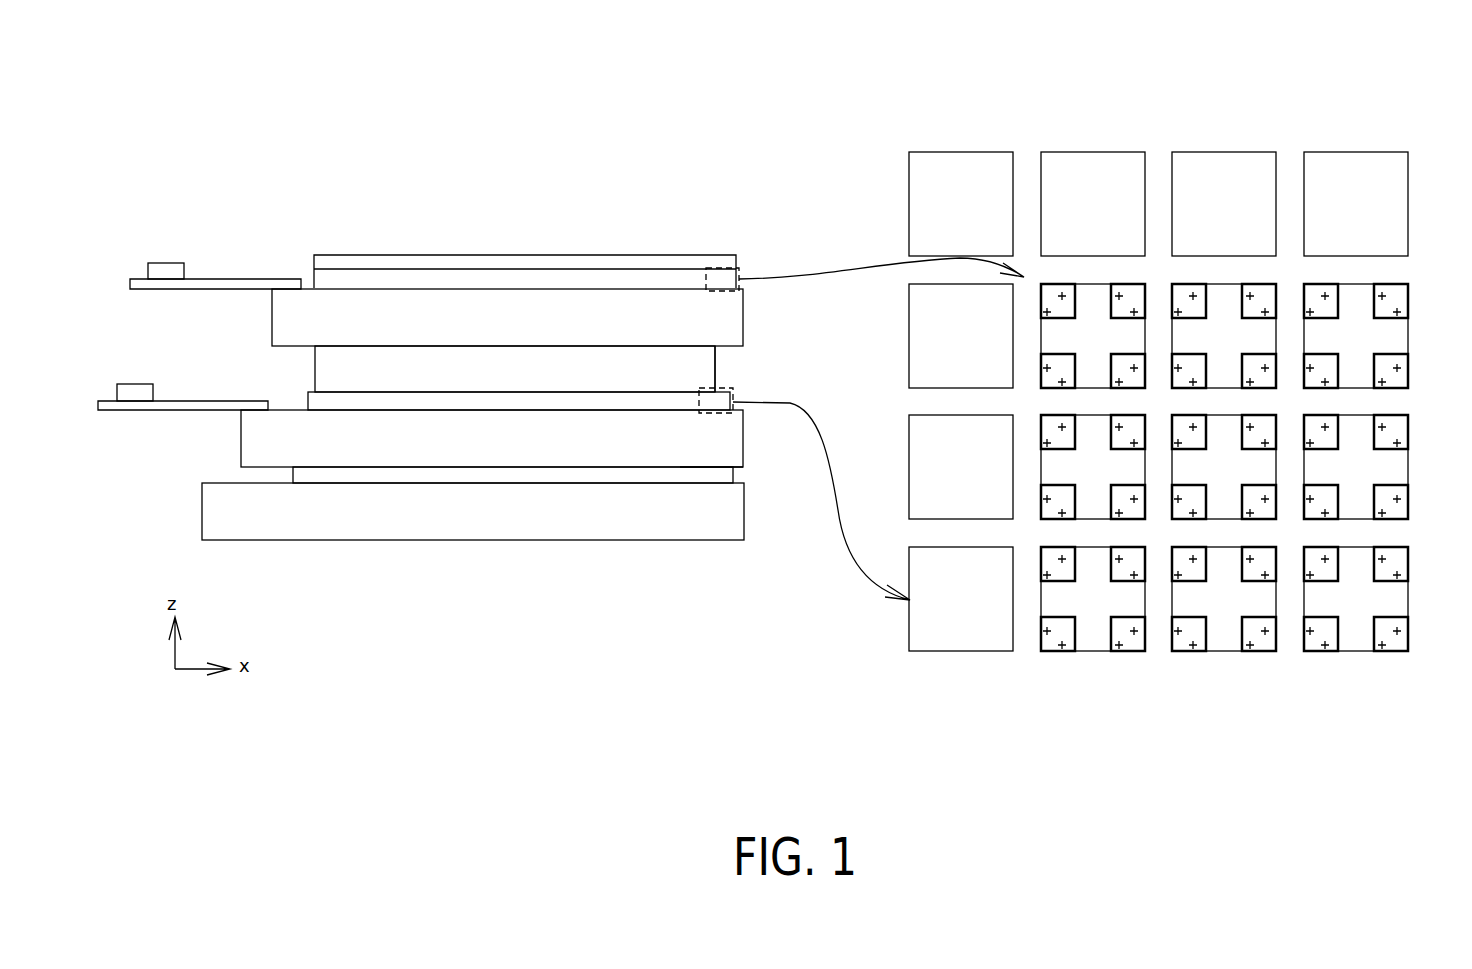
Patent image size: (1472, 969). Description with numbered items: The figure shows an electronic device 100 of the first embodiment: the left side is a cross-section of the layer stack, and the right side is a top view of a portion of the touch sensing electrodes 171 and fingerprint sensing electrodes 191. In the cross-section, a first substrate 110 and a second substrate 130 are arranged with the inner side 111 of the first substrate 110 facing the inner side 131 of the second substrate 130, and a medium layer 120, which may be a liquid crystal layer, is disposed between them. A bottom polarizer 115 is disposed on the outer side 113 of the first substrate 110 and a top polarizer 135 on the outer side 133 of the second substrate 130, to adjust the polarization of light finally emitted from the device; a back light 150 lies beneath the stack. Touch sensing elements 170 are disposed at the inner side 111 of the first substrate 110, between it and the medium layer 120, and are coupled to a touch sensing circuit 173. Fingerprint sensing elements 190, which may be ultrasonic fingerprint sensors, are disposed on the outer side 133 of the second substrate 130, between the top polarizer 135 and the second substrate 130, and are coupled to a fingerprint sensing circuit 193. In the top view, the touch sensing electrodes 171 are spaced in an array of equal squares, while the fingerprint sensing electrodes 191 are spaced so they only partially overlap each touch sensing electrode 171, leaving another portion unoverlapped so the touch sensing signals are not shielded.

The electronic device 100 is at (272, 70).
The first substrate 110 is at (488, 456).
The inner side of the first substrate 111 is at (675, 400).
The outer side of the first substrate 113 is at (707, 468).
The bottom polarizer 115 is at (723, 477).
The medium layer 120 is at (488, 385).
The second substrate 130 is at (488, 335).
The inner side of the second substrate 131 is at (728, 348).
The outer side of the second substrate 133 is at (689, 287).
The top polarizer 135 is at (498, 262).
The back light 150 is at (488, 531).
The touch sensing elements 170 is at (310, 407).
The touch sensing electrodes 171 is at (1190, 408).
The touch sensing circuit 173 is at (137, 384).
The fingerprint sensing elements 190 is at (320, 278).
The fingerprint sensing electrodes 191 is at (1052, 710).
The fingerprint sensing circuit 193 is at (168, 262).